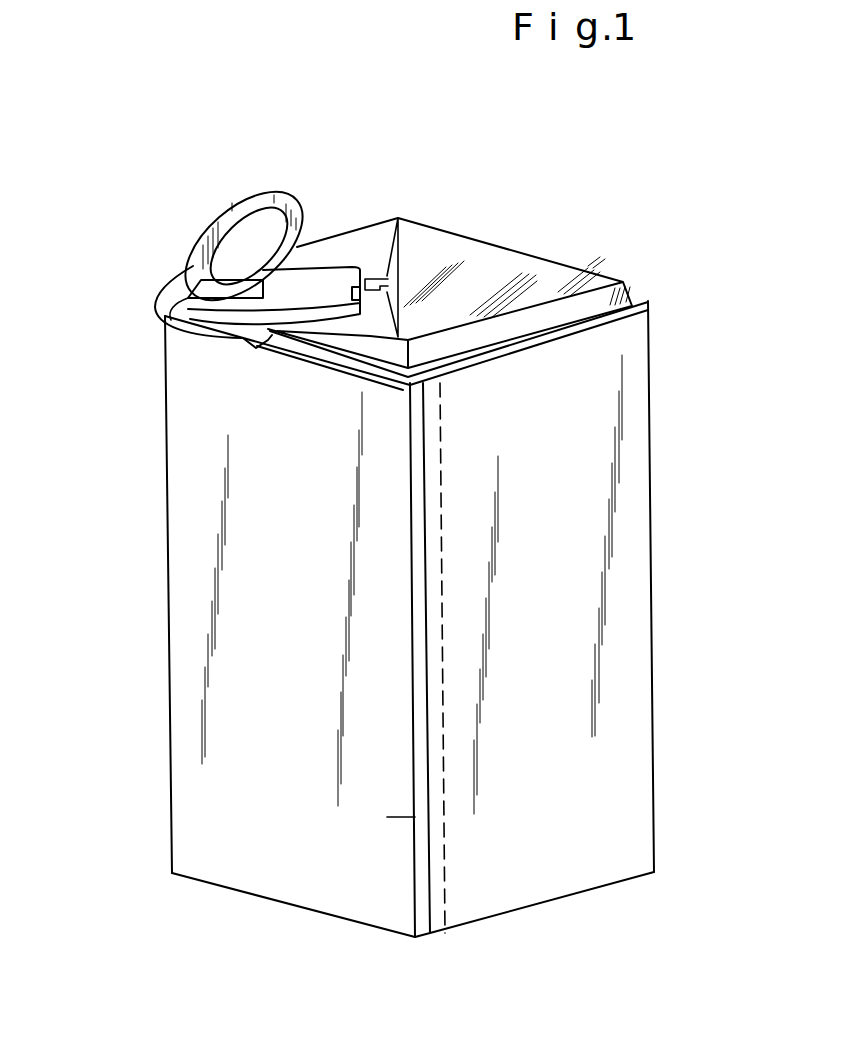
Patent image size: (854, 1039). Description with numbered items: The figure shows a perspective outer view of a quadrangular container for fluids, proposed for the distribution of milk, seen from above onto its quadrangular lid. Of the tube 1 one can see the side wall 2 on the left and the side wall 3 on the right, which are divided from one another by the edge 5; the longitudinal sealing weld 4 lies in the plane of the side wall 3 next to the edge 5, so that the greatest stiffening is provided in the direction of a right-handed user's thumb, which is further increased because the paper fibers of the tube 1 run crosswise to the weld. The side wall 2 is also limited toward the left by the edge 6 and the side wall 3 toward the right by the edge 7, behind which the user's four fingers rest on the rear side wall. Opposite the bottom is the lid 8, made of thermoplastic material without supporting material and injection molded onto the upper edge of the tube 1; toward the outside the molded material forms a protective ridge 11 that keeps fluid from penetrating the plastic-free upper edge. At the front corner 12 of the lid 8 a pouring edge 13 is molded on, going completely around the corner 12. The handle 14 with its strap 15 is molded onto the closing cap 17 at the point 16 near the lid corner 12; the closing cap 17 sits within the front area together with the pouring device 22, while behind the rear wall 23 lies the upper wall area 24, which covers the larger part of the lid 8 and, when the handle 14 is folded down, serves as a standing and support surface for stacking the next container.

The tube 1 is at (419, 639).
The side wall 2 is at (265, 545).
The side wall 3 is at (605, 773).
The longitudinal sealing weld 4 is at (437, 843).
The edge 5 is at (387, 817).
The edge 6 is at (168, 677).
The edge 7 is at (653, 705).
The lid 8 is at (450, 243).
The protective ridge 11 is at (650, 303).
The front corner 12 is at (169, 340).
The pouring edge 13 is at (252, 339).
The handle 14 is at (227, 203).
The strap 15 is at (193, 263).
The point 16 is at (160, 312).
The closing cap 17 is at (322, 285).
The pouring device 22 is at (223, 213).
The rear wall 23 is at (398, 216).
The upper wall area 24 is at (449, 288).